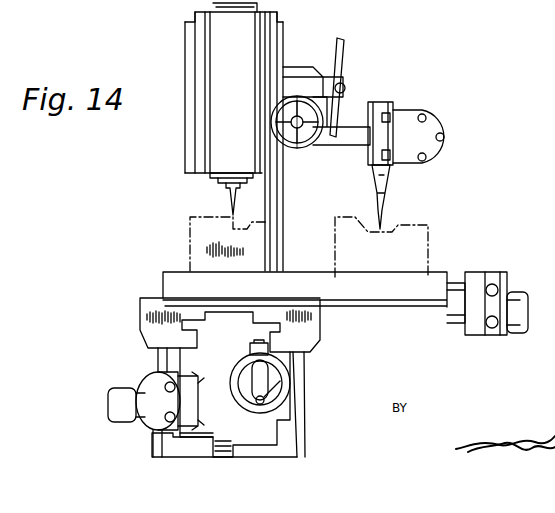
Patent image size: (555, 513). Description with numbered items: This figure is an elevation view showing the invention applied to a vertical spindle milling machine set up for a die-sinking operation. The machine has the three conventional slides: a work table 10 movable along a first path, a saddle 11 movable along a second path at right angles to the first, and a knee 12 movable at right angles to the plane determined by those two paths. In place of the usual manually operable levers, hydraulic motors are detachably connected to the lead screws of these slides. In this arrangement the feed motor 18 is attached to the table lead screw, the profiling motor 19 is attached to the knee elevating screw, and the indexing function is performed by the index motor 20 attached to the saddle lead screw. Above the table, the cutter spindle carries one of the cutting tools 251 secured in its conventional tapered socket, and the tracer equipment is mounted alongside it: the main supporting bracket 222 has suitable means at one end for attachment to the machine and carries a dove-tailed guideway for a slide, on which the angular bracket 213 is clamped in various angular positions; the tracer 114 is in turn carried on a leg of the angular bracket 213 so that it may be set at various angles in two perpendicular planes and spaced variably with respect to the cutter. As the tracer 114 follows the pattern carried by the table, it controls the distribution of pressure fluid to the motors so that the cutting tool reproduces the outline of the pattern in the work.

The work table 10 is at (172, 271).
The saddle 11 is at (140, 312).
The knee 12 is at (287, 410).
The feed motor 18 is at (512, 292).
The profiling motor 19 is at (143, 385).
The index motor 20 is at (273, 382).
The probe 114 is at (383, 205).
The angular bracket 213 is at (428, 130).
The main supporting bracket 222 is at (347, 127).
The cutting tools 251 is at (230, 200).